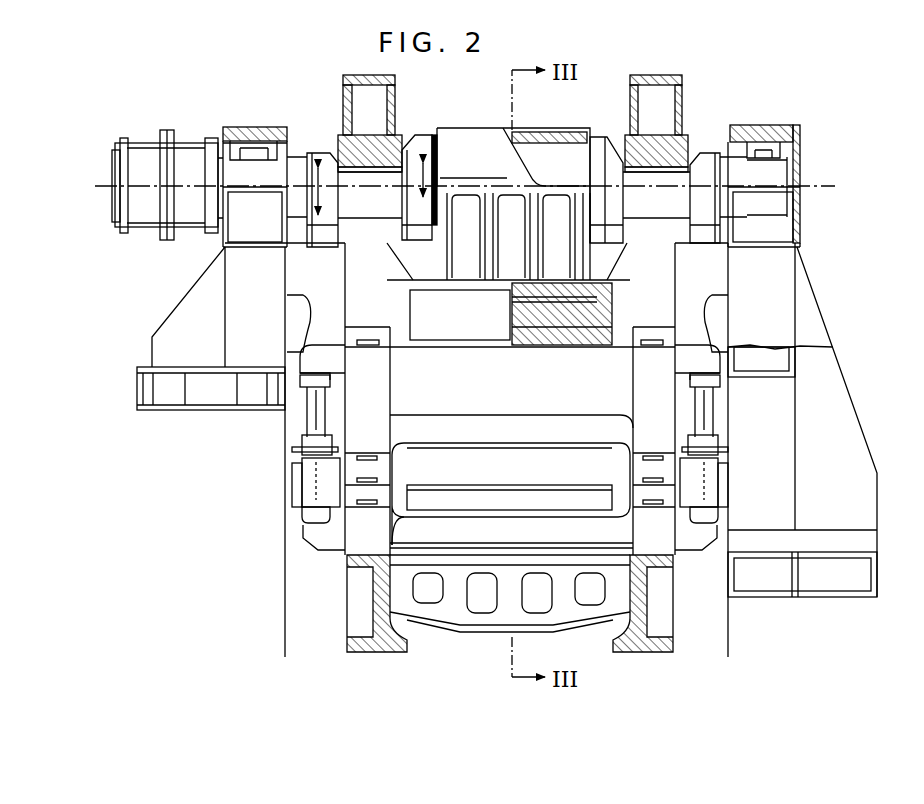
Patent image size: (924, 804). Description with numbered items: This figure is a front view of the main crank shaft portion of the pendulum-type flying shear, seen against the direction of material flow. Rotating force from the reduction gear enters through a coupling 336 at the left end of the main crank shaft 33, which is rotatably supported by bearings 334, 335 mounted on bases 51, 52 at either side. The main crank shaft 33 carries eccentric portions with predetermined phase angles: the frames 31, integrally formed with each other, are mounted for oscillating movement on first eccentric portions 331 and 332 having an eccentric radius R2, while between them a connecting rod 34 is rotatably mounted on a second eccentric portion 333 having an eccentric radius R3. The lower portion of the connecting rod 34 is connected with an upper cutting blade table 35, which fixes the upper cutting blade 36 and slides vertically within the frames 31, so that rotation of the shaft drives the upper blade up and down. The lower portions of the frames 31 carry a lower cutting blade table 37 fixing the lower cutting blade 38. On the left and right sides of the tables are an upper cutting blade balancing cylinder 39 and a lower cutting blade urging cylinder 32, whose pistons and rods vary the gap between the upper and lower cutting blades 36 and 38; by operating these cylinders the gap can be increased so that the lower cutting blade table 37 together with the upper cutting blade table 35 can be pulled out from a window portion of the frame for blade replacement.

The frame 31 is at (510, 399).
The lower cutting blade urging cylinder 32 is at (297, 489).
The main crank shaft 33 is at (737, 172).
The connecting rod 34 is at (475, 145).
The upper cutting blade table 35 is at (567, 428).
The upper cutting blade 36 is at (429, 499).
The lower cutting blade table 37 is at (610, 533).
The lower cutting blade 38 is at (553, 500).
The upper cutting blade balancing cylinder 39 is at (712, 475).
The base 51 is at (170, 324).
The base 52 is at (852, 450).
The first eccentric portion 331 is at (412, 160).
The first eccentric portion 332 is at (704, 165).
The second eccentric portion 333 is at (605, 160).
The bearing 334 is at (258, 148).
The bearing 335 is at (763, 147).
The coupling 336 is at (157, 232).
The eccentric radius R2 is at (340, 158).
The eccentric radius R3 is at (432, 150).